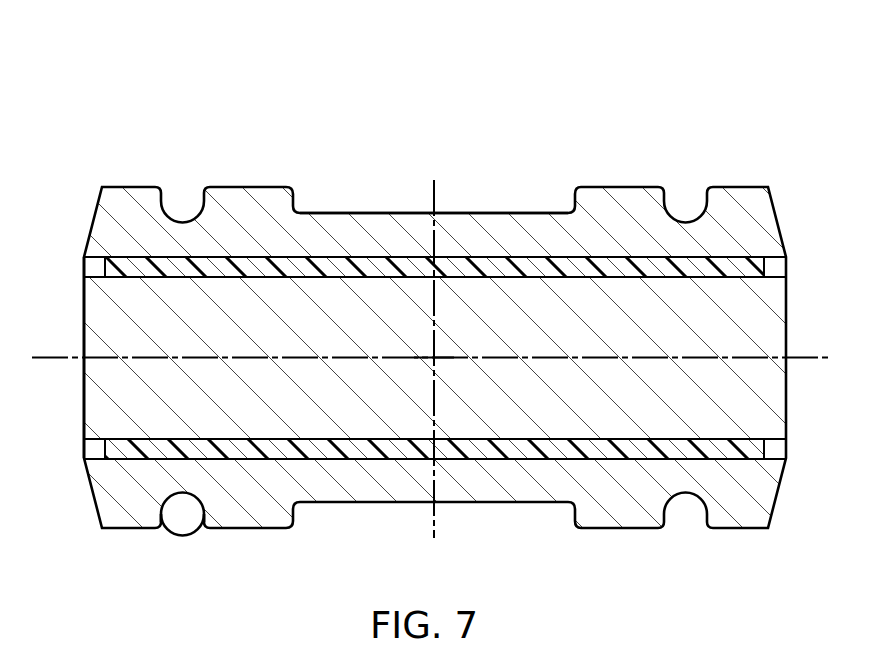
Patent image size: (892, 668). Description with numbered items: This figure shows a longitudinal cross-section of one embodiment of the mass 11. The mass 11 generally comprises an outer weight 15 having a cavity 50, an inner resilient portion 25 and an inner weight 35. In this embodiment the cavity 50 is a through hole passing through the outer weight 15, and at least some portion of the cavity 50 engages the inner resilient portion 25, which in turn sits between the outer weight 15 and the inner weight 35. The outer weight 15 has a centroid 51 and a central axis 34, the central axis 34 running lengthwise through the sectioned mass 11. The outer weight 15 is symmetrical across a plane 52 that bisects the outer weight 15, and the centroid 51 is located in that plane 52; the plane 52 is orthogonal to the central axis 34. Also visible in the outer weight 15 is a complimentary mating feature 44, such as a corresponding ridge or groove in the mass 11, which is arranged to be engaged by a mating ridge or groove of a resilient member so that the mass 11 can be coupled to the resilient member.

The mass 11 is at (651, 110).
The outer weight 15 is at (466, 212).
The inner resilient portion 25 is at (84, 448).
The central axis 34 is at (816, 358).
The inner weight 35 is at (84, 305).
The complimentary mating feature 44 is at (181, 507).
The cavity 50 is at (303, 260).
The centroid 51 is at (434, 358).
The plane 52 is at (433, 523).